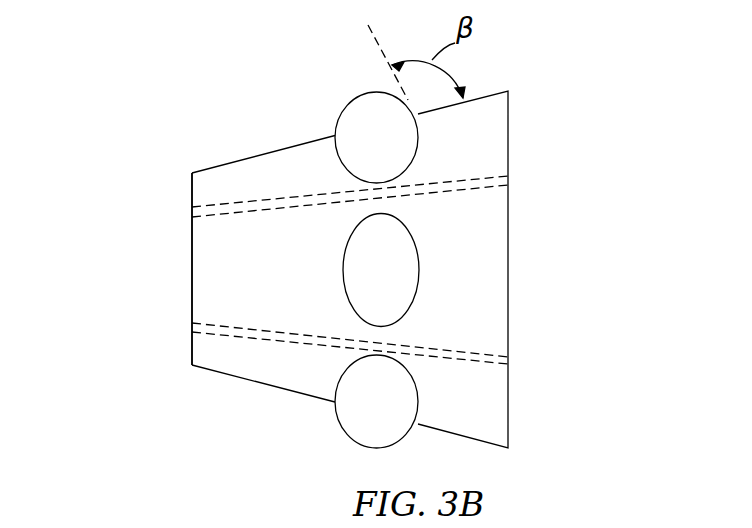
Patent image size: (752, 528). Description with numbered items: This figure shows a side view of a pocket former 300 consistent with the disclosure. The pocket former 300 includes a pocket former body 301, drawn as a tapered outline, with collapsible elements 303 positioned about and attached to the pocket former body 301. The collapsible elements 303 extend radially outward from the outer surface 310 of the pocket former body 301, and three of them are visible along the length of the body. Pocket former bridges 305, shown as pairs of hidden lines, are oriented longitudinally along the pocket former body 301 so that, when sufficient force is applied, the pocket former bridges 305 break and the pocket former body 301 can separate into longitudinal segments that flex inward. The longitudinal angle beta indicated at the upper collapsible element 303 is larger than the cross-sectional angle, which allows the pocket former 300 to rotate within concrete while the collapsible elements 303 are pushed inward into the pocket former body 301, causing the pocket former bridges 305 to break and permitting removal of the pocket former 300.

The pocket former 300 is at (175, 143).
The pocket former body 301 is at (192, 268).
The collapsible elements 303 is at (347, 110).
The pocket former bridges 305 is at (510, 177).
The outer surface 310 is at (481, 137).